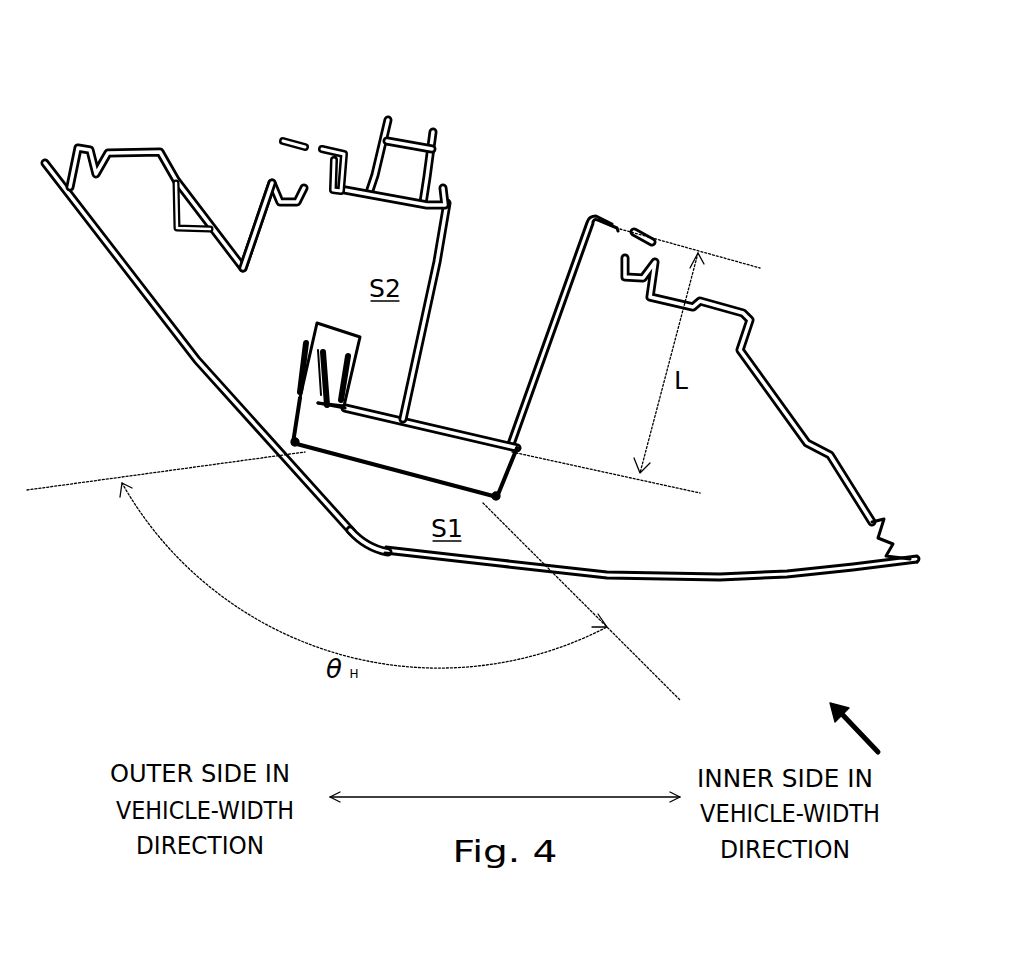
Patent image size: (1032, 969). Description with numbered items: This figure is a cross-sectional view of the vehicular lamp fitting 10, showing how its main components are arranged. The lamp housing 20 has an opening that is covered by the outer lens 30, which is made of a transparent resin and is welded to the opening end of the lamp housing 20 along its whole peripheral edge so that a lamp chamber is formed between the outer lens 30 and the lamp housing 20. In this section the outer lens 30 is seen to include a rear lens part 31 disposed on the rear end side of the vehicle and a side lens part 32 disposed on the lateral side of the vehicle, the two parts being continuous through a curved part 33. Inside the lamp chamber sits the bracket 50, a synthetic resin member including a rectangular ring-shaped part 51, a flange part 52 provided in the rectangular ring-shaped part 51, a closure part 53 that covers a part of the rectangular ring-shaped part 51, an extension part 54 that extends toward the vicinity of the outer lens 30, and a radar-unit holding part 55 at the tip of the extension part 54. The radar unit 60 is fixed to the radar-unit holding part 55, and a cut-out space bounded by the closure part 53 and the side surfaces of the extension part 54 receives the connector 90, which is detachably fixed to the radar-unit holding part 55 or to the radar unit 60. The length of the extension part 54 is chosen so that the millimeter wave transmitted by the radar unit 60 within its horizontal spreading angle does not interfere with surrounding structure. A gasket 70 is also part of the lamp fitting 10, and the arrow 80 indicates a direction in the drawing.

The vehicular lamp fitting 10 is at (490, 84).
The lamp housing 20 is at (780, 393).
The outer lens 30 is at (692, 582).
The rear lens part 31 is at (628, 583).
The side lens part 32 is at (192, 363).
The curved part 33 is at (365, 553).
The bracket 50 is at (557, 348).
The rectangular ring-shaped part 51 is at (327, 172).
The flange part 52 is at (600, 218).
The closure part 53 is at (358, 197).
The extension part 54 is at (540, 397).
The radar-unit holding part 55 is at (460, 426).
The radar unit 60 is at (404, 486).
The gasket 70 is at (323, 175).
The collision load direction arrow 80 is at (860, 735).
The connector 90 is at (312, 332).